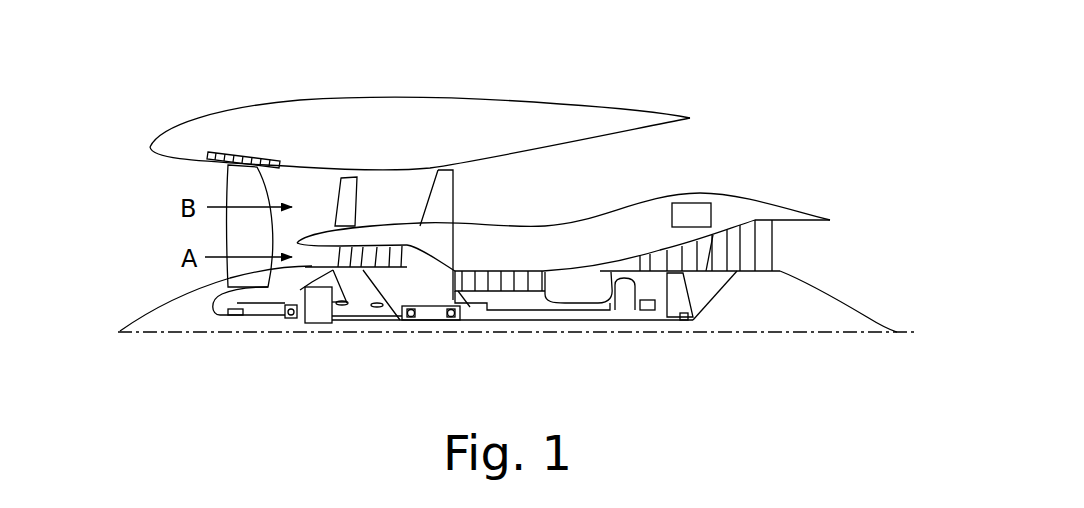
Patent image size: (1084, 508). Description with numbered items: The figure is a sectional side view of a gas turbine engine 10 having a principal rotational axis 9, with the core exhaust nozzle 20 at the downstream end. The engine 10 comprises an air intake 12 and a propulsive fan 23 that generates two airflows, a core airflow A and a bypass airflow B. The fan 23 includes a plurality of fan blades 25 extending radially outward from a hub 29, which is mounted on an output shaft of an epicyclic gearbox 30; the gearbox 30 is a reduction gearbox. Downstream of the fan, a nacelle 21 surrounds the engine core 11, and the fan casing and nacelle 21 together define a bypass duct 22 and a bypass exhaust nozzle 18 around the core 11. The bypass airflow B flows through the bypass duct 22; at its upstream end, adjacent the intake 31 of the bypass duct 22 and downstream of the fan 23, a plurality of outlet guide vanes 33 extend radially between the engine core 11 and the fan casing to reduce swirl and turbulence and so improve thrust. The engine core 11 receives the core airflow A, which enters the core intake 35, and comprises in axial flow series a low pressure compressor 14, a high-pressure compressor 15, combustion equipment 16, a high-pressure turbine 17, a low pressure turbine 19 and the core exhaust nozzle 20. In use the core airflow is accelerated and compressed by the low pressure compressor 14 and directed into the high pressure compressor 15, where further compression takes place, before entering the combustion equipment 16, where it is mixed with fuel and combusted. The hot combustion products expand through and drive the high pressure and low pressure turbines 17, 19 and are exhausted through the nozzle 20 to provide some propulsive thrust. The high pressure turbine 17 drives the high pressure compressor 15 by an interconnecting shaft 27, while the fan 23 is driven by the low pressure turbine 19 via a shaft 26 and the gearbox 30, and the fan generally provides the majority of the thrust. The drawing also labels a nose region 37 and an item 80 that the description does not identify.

The principal rotational axis 9 is at (797, 337).
The gas turbine engine 10 is at (204, 116).
The core 11 is at (585, 249).
The air intake 12 is at (159, 179).
The low pressure compressor 14 is at (377, 255).
The high-pressure compressor 15 is at (508, 268).
The combustion equipment 16 is at (570, 280).
The high-pressure turbine 17 is at (627, 263).
The bypass exhaust nozzle 18 is at (765, 153).
The low pressure turbine 19 is at (750, 260).
The core exhaust nozzle 20 is at (829, 258).
The nacelle 21 is at (430, 112).
The bypass duct 22 is at (653, 160).
The propulsive fan 23 is at (233, 230).
The fan blades 25 is at (233, 160).
The shaft 26 is at (473, 320).
The interconnecting shaft 27 is at (537, 302).
The hub 29 is at (243, 283).
The epicyclic gearbox 30 is at (322, 310).
The intake of the bypass duct 31 is at (305, 178).
The outlet guide vanes 33 is at (348, 180).
The core intake 35 is at (297, 262).
The nose cone 37 is at (182, 316).
The sensor 80 is at (697, 215).